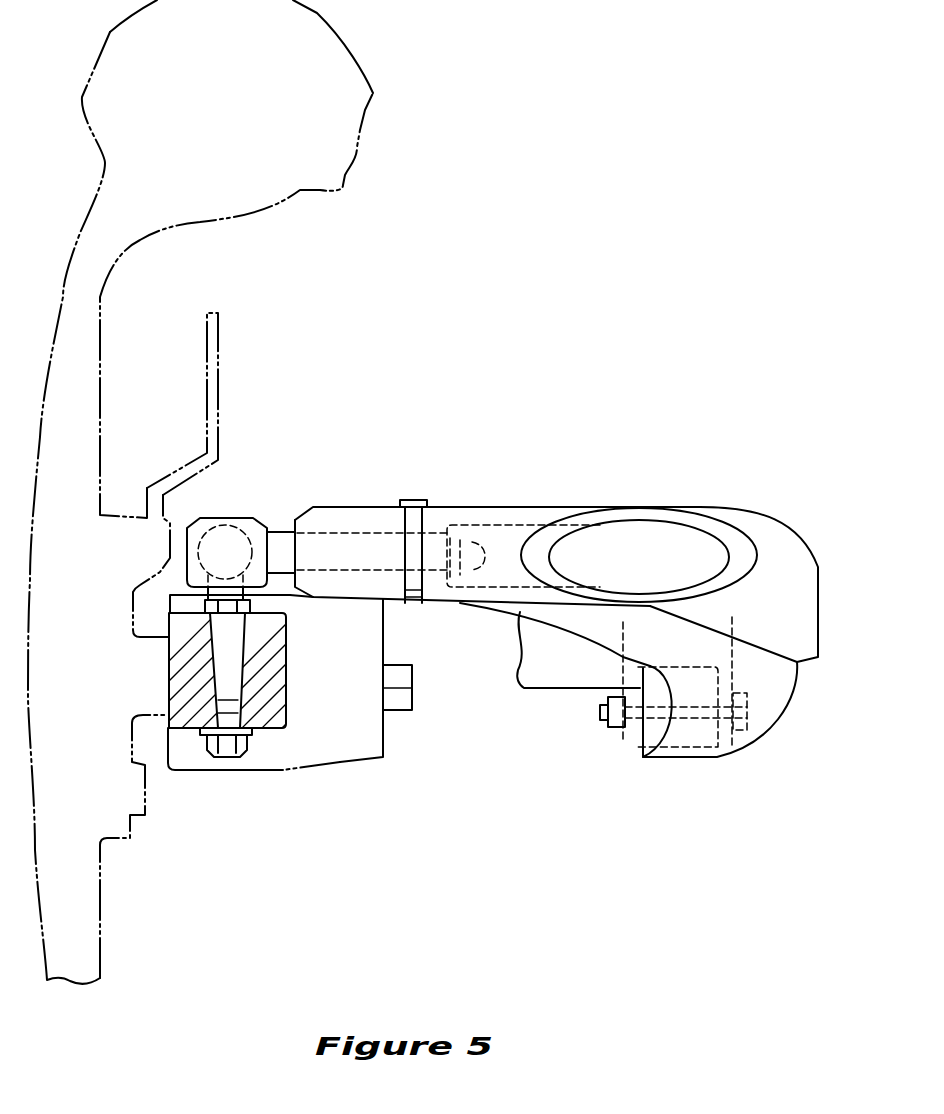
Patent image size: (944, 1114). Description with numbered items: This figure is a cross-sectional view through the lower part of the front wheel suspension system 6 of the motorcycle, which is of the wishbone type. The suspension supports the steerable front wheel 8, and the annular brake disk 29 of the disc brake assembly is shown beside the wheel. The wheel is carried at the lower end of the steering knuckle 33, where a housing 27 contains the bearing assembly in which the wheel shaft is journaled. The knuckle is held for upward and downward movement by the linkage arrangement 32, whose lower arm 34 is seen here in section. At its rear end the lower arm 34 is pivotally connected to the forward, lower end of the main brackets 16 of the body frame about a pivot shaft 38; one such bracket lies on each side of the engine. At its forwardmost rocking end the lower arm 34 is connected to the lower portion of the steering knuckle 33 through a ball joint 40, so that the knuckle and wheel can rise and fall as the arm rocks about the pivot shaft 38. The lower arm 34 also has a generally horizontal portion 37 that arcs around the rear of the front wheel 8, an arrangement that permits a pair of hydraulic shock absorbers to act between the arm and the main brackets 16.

The front wheel 8 is at (340, 142).
The annular brake disk 29 is at (218, 388).
The ball joint 40 is at (237, 515).
The front wheel suspension system 6 is at (593, 422).
The linkage arrangement 32 is at (773, 523).
The steering knuckle 33 is at (271, 713).
The housing 27 is at (335, 768).
The generally horizontal portion 37 is at (547, 668).
The pivot shaft 38 is at (600, 713).
The main brackets 16 is at (633, 745).
The lower arm 34 is at (767, 700).